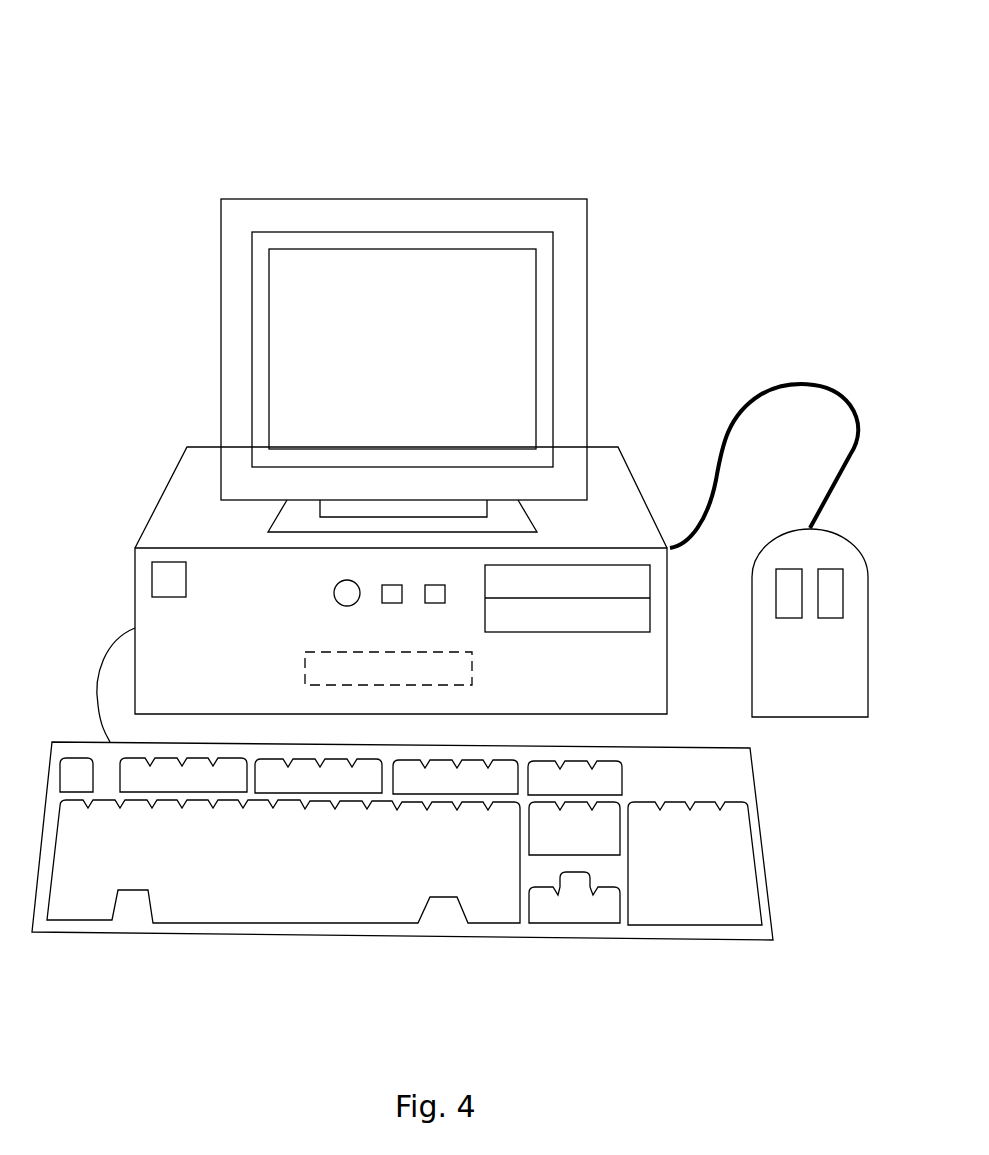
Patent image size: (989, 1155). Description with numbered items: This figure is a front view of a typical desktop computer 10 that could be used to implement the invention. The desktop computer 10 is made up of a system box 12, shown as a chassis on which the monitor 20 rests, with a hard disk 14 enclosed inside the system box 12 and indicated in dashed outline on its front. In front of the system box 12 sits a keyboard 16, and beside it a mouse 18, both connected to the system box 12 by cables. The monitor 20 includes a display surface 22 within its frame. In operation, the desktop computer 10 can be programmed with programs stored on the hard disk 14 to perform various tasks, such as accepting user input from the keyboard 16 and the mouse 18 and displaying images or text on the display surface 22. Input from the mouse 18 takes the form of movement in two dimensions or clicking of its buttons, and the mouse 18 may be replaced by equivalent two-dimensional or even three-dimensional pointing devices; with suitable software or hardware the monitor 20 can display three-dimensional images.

The desktop computer 10 is at (685, 84).
The system box 12 is at (667, 630).
The hard disk 14 is at (472, 670).
The keyboard 16 is at (765, 913).
The mouse 18 is at (868, 621).
The monitor 20 is at (587, 349).
The display surface 22 is at (402, 348).